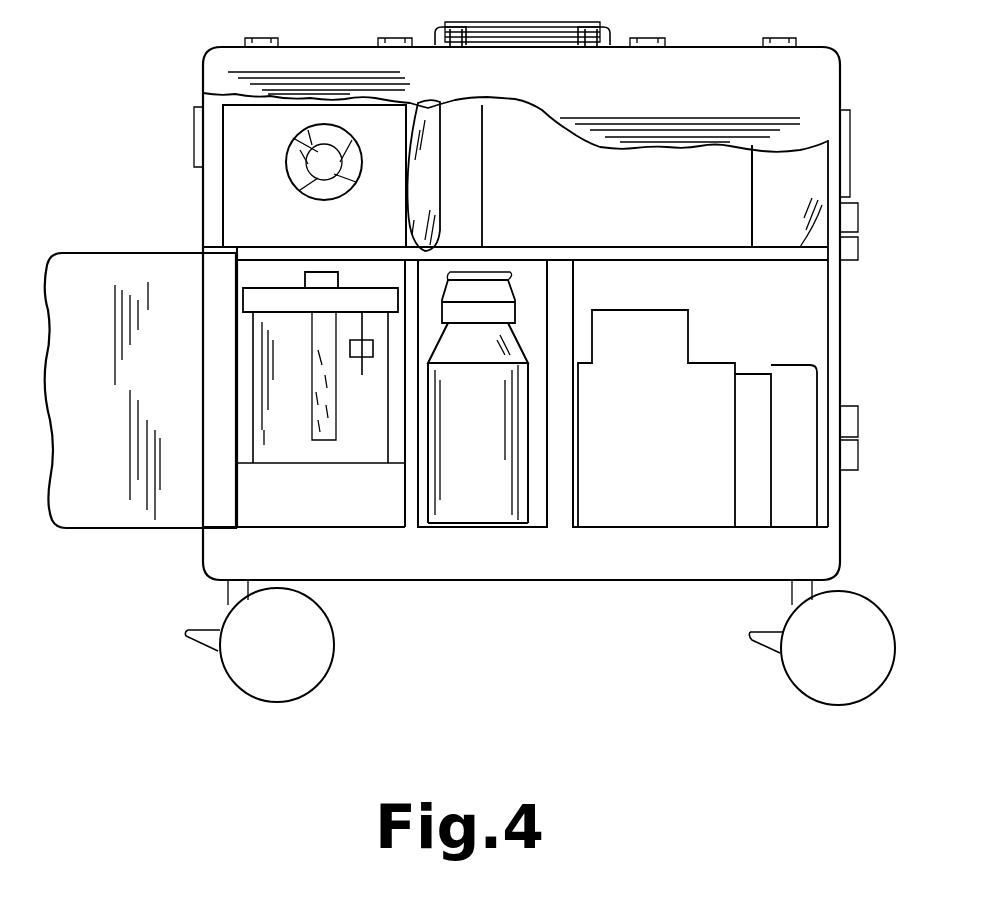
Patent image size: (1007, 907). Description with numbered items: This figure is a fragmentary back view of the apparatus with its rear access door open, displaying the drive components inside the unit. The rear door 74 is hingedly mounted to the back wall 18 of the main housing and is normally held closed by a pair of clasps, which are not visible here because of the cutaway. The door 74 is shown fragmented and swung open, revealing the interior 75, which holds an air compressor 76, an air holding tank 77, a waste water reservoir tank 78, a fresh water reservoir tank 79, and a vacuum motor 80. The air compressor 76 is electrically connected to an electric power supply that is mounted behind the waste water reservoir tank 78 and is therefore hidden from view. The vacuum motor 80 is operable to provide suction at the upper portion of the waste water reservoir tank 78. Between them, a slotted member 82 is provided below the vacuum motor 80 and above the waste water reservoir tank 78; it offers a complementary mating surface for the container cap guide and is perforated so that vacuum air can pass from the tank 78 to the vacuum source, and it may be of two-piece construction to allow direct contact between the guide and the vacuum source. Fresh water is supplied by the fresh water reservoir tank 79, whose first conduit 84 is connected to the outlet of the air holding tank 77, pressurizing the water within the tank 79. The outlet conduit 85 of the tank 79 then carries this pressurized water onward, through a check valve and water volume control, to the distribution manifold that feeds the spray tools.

The back wall 18 is at (828, 70).
The rear door 74 is at (118, 265).
The interior 75 is at (245, 444).
The air compressor 76 is at (607, 515).
The air holding tank 77 is at (778, 238).
The waste water reservoir tank 78 is at (325, 452).
The fresh water reservoir tank 79 is at (465, 513).
The vacuum motor 80 is at (235, 202).
The slotted member 82 is at (252, 272).
The first conduit 84 is at (470, 280).
The outlet conduit 85 is at (470, 278).